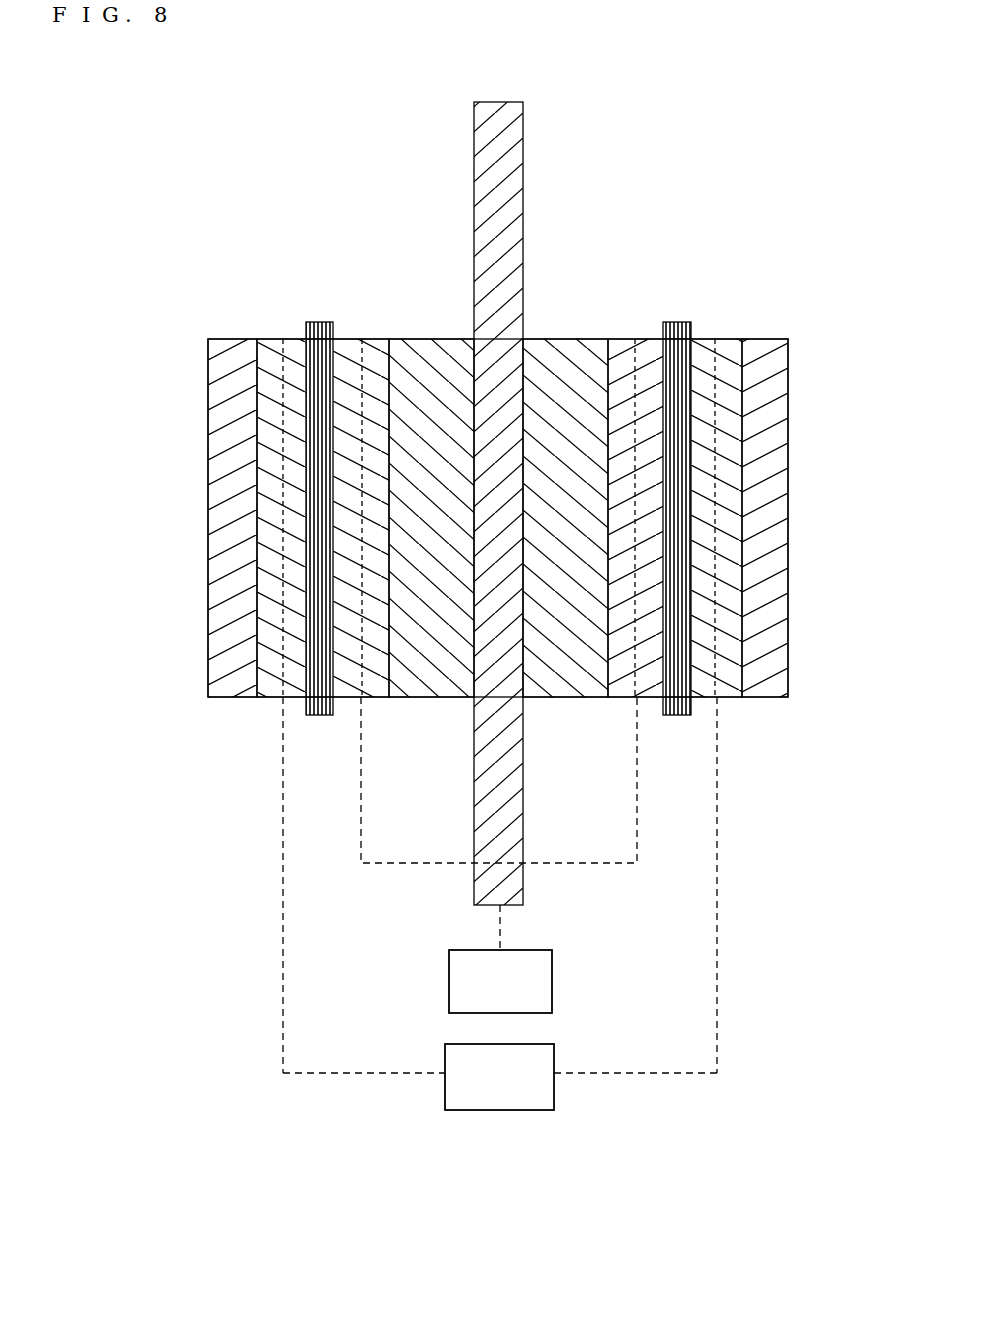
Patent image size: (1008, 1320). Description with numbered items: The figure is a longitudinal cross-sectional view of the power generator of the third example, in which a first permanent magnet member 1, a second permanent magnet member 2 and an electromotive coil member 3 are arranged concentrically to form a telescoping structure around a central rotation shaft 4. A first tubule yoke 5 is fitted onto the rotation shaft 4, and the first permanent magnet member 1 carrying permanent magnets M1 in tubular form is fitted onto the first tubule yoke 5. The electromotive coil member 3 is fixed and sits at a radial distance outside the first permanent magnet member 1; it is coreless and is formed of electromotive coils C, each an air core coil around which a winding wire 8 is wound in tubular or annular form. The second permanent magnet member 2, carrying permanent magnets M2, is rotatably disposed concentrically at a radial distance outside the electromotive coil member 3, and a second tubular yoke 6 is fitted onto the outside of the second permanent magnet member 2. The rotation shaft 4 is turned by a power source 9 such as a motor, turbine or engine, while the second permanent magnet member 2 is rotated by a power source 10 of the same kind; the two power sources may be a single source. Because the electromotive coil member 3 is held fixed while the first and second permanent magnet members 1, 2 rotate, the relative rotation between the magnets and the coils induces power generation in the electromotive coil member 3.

The first permanent magnet member 1 is at (381, 702).
The second permanent magnet member 2 is at (507, 512).
The electromotive coil member 3 is at (490, 458).
The rotation shaft 4 is at (492, 105).
The first tubule yoke 5 is at (570, 360).
The second tubular yoke 6 is at (215, 420).
The winding wire 8 is at (315, 718).
The power source 9 is at (513, 991).
The power source 10 is at (518, 1088).
The electromotive coil C is at (318, 322).
The permanent magnet M1 is at (372, 350).
The permanent magnet M2 is at (728, 350).